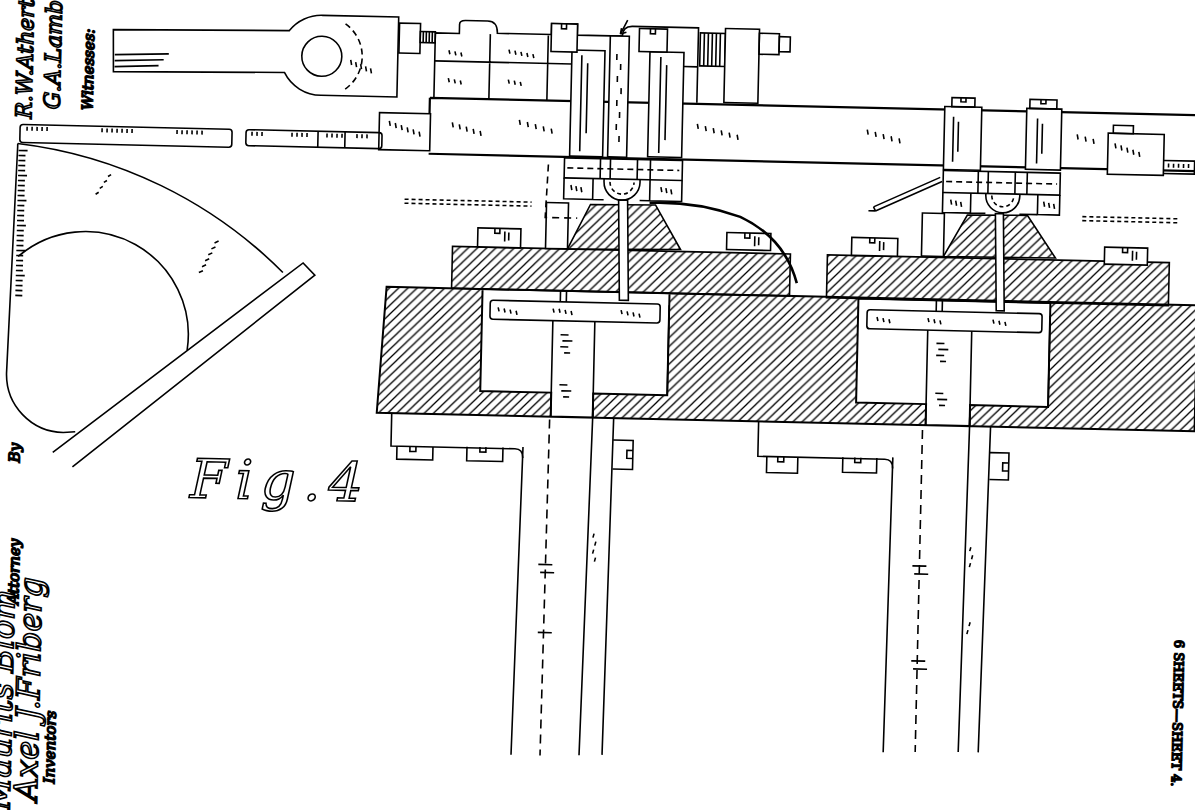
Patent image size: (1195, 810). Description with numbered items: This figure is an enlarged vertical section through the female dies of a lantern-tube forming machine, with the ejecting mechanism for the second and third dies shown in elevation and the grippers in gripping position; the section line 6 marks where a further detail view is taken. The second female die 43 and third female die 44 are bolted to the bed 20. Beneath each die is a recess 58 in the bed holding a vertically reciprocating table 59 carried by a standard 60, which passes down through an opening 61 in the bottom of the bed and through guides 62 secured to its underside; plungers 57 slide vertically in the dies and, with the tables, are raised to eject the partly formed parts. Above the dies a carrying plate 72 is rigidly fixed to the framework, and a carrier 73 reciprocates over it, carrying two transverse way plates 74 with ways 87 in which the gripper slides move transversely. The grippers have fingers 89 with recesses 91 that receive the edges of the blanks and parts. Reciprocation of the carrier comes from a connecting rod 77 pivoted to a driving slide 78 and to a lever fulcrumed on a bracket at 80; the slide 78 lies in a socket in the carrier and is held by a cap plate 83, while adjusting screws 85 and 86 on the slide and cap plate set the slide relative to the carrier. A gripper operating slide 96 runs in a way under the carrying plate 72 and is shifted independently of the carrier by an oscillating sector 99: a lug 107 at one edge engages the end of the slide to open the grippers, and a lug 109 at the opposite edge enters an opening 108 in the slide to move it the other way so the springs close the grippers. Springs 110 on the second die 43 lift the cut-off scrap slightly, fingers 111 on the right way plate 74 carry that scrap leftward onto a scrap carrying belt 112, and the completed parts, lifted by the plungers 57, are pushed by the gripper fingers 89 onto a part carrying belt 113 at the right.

The bed 20 is at (395, 329).
The plungers 57 is at (662, 233).
The second female die 43 is at (666, 196).
The third female die 44 is at (1040, 216).
The table 59 is at (766, 311).
The standard 60 is at (761, 373).
The recess 58 is at (834, 355).
The opening 61 is at (606, 380).
The guides 62 is at (612, 516).
The carrier 73 is at (812, 134).
The carrying plate 72 is at (407, 142).
The gripper operating slide 96 is at (304, 138).
The opening 108 is at (349, 142).
The lug 107 is at (30, 150).
The oscillating sector 99 is at (145, 290).
The lug 109 is at (309, 256).
The connecting rod 77 is at (255, 54).
The driving slide 78 is at (366, 24).
The adjusting screw 86 is at (412, 23).
The fulcrum 80 is at (429, 38).
The cap plate 83 is at (566, 57).
The adjusting screw 85 is at (722, 7).
The ways 87 is at (694, 148).
The transverse plates 74 is at (568, 150).
The fingers 89 is at (1066, 184).
The recesses 91 is at (981, 168).
The fingers 111 is at (904, 176).
The springs 110 is at (770, 199).
The part carrying belt 113 is at (1127, 197).
The scrap carrying belt 112 is at (428, 196).
The section line 6— 6 is at (582, 117).